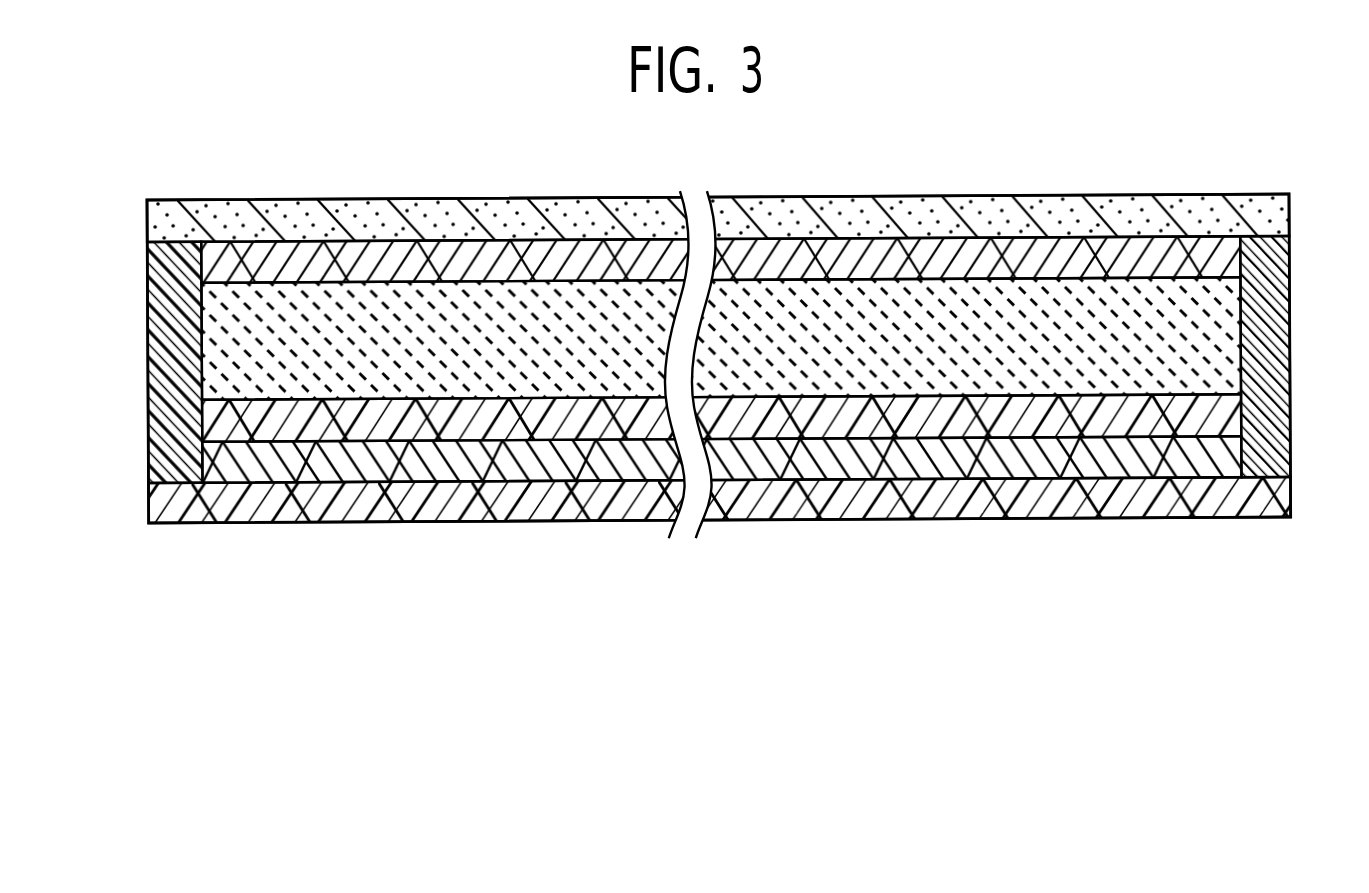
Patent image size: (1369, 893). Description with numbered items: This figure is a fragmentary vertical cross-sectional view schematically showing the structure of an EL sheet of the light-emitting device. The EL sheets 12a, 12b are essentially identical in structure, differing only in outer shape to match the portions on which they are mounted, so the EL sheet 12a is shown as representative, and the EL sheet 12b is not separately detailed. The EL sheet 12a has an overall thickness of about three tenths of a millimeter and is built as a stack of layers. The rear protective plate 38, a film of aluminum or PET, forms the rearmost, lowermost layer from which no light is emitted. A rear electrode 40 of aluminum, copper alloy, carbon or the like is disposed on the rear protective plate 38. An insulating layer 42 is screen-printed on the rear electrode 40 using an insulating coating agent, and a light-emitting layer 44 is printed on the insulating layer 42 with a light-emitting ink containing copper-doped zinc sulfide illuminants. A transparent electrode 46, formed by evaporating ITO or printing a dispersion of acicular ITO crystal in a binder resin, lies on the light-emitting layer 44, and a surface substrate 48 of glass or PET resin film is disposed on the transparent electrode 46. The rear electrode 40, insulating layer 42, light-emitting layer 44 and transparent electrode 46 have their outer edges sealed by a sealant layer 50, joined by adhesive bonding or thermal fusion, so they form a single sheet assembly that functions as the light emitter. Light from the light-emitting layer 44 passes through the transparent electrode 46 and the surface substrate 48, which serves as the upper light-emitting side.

The EL sheet 12a is at (1139, 117).
The EL sheet 12b is at (1205, 117).
The rear protective plate 38 is at (1257, 496).
The rear electrode 40 is at (222, 464).
The insulating layer 42 is at (220, 424).
The light-emitting layer 44 is at (215, 330).
The transparent electrode 46 is at (222, 268).
The surface substrate 48 is at (1253, 220).
The sealant layer 50 is at (163, 380).